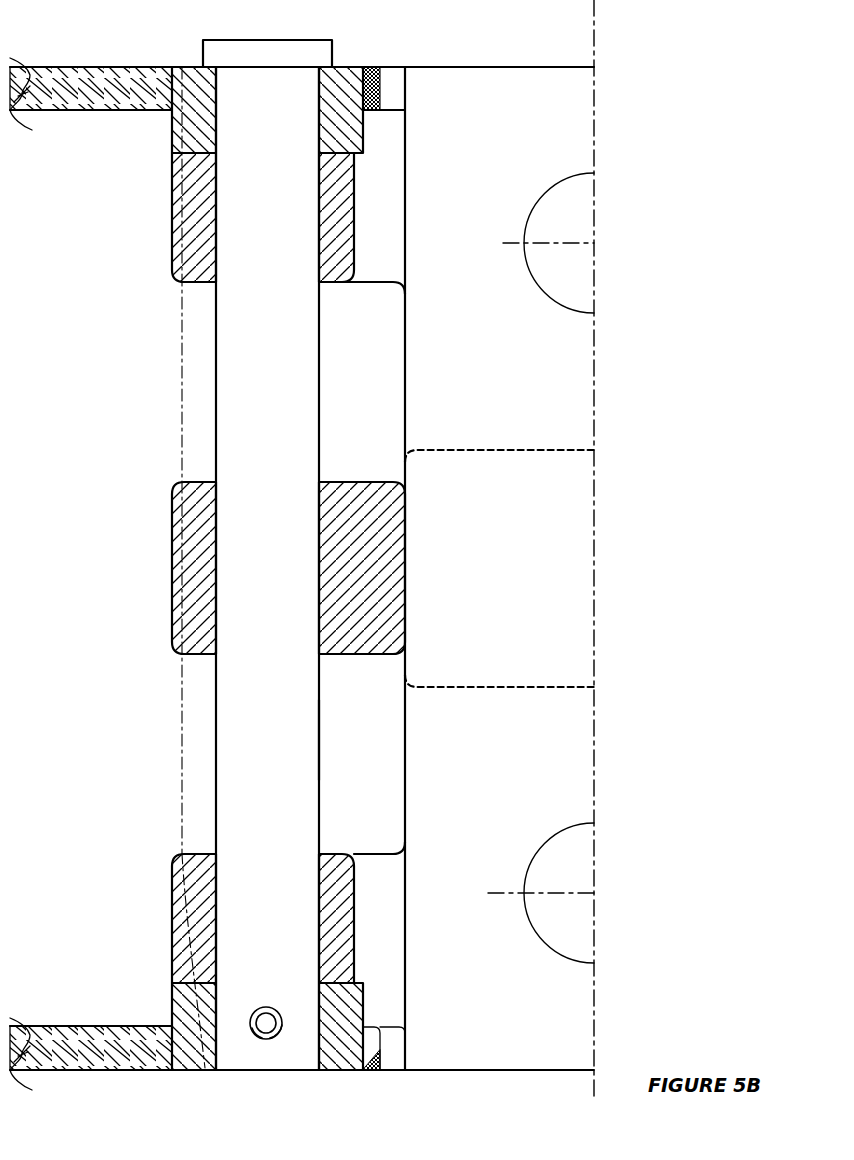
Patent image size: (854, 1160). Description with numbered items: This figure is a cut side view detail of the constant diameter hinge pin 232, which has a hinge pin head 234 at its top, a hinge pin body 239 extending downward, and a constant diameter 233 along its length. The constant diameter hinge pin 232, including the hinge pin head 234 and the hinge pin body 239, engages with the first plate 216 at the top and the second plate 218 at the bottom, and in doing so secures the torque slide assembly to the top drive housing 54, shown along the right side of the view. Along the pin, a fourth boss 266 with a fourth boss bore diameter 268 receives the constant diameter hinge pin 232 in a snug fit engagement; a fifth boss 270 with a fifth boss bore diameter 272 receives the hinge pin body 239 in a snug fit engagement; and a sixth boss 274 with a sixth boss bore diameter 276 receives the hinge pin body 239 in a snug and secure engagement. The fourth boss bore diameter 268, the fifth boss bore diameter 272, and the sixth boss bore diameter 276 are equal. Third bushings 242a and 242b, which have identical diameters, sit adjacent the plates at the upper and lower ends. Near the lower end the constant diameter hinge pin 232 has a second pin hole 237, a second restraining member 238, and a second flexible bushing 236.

The top drive housing 54 is at (556, 113).
The first plate 216 is at (100, 67).
The second plate 218 is at (110, 1070).
The constant diameter hinge pin 232 is at (319, 330).
The constant diameter 233 is at (319, 383).
The hinge pin head 234 is at (298, 40).
The second flexible bushing 236 is at (268, 1028).
The second pin hole 237 is at (266, 1025).
The second restraining member 238 is at (252, 1036).
The hinge pin body 239 is at (319, 741).
The third bushing 242a is at (363, 1005).
The third bushing 242b is at (363, 130).
The fourth boss 266 is at (172, 212).
The fourth boss bore diameter 268 is at (319, 207).
The fifth boss 270 is at (172, 925).
The fifth boss bore diameter 272 is at (319, 902).
The sixth boss 274 is at (172, 570).
The sixth boss bore diameter 276 is at (319, 571).